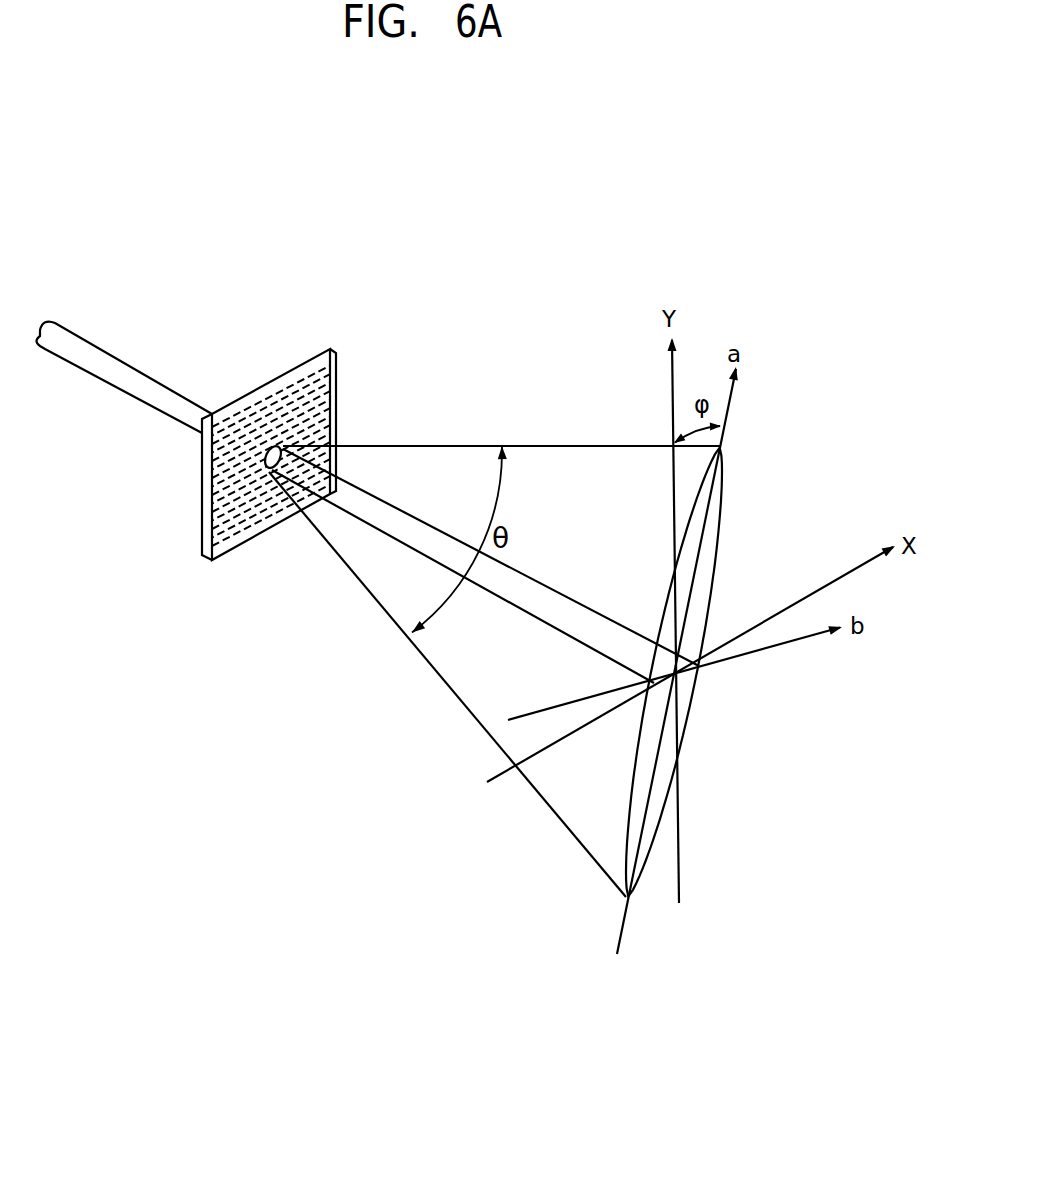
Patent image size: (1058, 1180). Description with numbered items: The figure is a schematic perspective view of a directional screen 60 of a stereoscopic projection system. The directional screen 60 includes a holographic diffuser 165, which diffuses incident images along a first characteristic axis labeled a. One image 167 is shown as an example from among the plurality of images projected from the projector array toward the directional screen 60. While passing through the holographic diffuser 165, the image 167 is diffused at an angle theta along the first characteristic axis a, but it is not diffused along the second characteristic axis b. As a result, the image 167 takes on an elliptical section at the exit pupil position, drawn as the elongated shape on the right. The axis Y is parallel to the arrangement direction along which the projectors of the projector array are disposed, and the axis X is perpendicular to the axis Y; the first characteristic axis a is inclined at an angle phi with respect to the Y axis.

The directional screen 60 is at (231, 448).
The holographic diffuser 165 is at (204, 555).
The image 167 is at (722, 549).